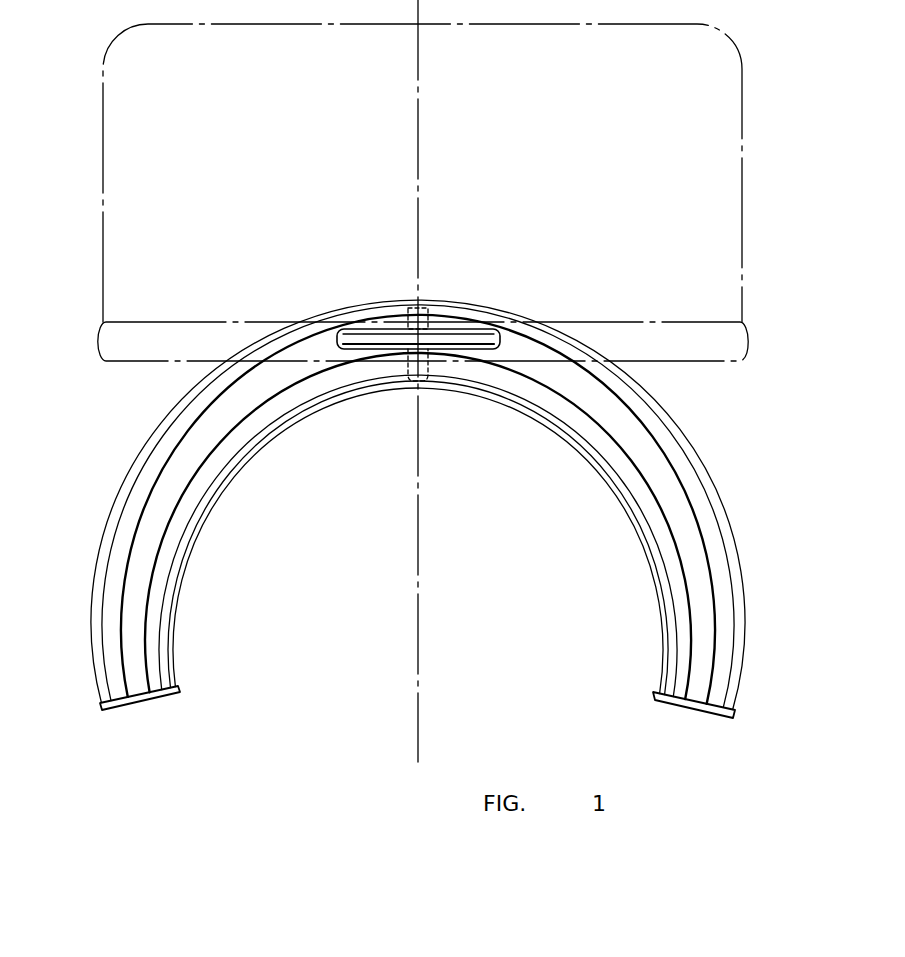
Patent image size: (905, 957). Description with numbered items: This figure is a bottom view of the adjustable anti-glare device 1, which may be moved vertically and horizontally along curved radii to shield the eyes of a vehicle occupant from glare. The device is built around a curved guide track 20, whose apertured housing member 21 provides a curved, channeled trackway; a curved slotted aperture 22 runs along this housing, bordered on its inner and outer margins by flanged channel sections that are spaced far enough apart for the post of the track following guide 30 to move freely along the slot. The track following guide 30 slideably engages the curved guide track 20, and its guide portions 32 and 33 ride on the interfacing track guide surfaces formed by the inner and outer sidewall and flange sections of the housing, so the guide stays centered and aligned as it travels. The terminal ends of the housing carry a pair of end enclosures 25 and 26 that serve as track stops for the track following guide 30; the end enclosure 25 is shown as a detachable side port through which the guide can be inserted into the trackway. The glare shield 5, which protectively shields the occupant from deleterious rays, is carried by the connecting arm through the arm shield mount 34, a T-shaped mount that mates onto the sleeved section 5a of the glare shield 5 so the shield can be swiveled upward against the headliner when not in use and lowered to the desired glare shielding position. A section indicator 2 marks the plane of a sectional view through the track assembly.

The anti-glare device 1 is at (473, 398).
The section line 2 is at (398, 751).
The glare shield 5 is at (118, 134).
The sleeved section 5a is at (748, 320).
The curved guide track 20 is at (128, 493).
The apertured housing member 21 is at (195, 530).
The curved slotted aperture 22 is at (207, 433).
The end enclosure 25 is at (142, 711).
The end enclosure 26 is at (688, 712).
The track following guide 30 is at (473, 327).
The track following guide portion 32 is at (412, 377).
The track following guide portion 33 is at (432, 312).
The arm shield mount 34 is at (352, 329).